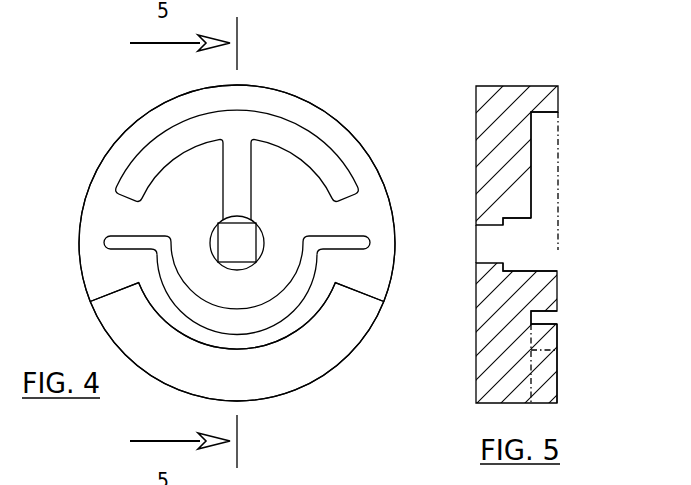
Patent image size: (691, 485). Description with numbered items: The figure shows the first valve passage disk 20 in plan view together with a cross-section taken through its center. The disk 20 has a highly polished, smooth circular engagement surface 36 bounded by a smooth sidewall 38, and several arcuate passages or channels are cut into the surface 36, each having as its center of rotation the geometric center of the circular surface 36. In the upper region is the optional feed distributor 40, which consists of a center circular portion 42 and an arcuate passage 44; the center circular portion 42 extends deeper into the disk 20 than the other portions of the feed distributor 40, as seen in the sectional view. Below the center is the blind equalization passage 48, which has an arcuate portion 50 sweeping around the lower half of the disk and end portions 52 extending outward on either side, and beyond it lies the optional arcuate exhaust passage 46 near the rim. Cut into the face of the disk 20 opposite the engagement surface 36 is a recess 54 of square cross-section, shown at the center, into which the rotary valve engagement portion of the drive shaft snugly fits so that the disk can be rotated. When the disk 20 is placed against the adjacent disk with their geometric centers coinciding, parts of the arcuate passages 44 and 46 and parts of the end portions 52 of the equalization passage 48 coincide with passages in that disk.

In FIG. 4, the valve passage disk 20 is at (227, 243).
In FIG. 4, the circular engagement surface 36 is at (203, 258).
In FIG. 5, the circular engagement surface 36 is at (558, 292).
In FIG. 5, the sidewall 38 is at (517, 138).
In FIG. 4, the feed distributor 40 is at (236, 173).
In FIG. 5, the feed distributor 40 is at (543, 180).
In FIG. 4, the center circular portion 42 is at (261, 237).
In FIG. 5, the center circular portion 42 is at (550, 268).
In FIG. 4, the arcuate passage 44 is at (237, 133).
In FIG. 5, the arcuate passage 44 is at (542, 126).
In FIG. 4, the arcuate exhaust passage 46 is at (214, 382).
In FIG. 5, the arcuate exhaust passage 46 is at (542, 378).
In FIG. 4, the blind equalization passage 48 is at (85, 268).
In FIG. 4, the arcuate portion 50 is at (285, 297).
In FIG. 5, the arcuate portion 50 is at (540, 318).
In FIG. 4, the end portions 52 is at (104, 243).
In FIG. 4, the recess 54 is at (206, 234).
In FIG. 5, the recess 54 is at (457, 233).